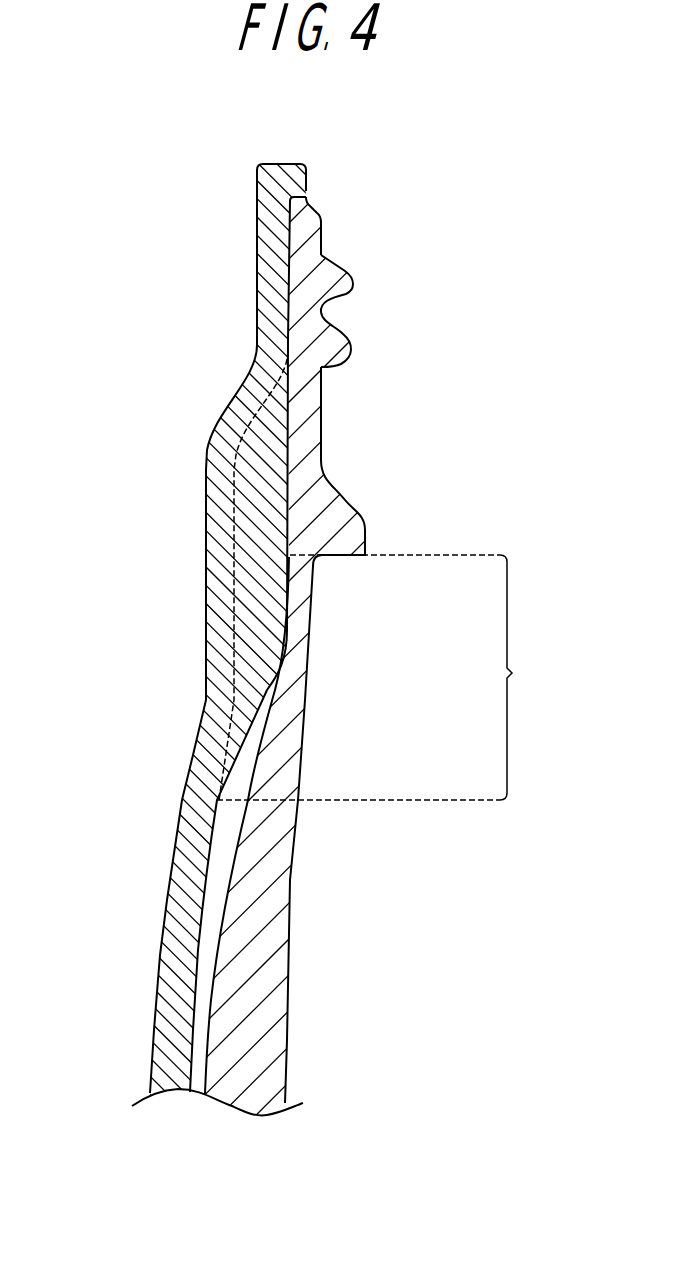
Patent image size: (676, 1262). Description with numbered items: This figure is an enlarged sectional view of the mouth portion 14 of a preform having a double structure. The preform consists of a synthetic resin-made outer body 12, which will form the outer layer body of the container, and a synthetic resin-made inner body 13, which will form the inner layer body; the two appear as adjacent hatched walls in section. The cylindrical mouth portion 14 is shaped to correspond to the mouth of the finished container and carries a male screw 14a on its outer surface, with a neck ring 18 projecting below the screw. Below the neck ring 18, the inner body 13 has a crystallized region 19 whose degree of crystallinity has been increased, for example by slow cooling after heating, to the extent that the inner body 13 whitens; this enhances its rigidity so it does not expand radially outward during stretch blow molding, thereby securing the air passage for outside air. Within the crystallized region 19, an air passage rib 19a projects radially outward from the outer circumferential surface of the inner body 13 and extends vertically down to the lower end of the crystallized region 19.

The outer body 12 is at (314, 872).
The inner body 13 is at (160, 835).
The mouth portion 14 is at (340, 377).
The male screw 14a is at (343, 283).
The neck ring 18 is at (358, 541).
The crystallized region 19 is at (378, 677).
The air passage rib 19a is at (260, 589).